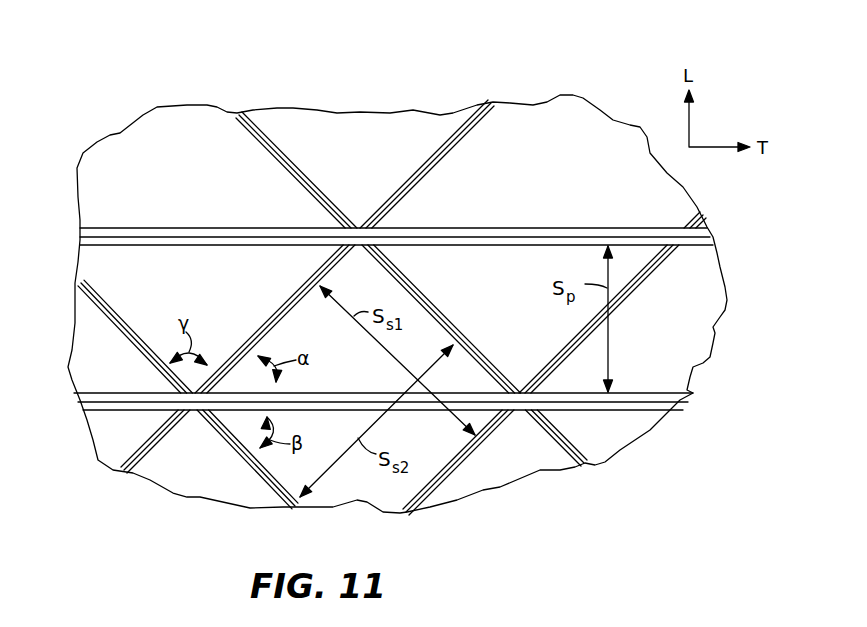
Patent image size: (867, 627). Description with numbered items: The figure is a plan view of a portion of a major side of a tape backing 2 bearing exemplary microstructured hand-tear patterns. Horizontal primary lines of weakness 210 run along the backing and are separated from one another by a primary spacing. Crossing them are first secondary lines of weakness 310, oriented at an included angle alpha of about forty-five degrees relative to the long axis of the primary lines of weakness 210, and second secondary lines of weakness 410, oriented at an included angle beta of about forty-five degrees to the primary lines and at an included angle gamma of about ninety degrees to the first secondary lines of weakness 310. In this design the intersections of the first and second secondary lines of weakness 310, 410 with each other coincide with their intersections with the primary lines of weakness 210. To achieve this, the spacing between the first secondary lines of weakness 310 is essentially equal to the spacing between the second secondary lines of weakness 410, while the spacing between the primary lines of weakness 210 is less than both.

The composite structure 2 is at (133, 47).
The primary lines of weakness 210 is at (708, 238).
The first secondary lines of weakness 310 is at (122, 472).
The second secondary lines of weakness 410 is at (80, 283).